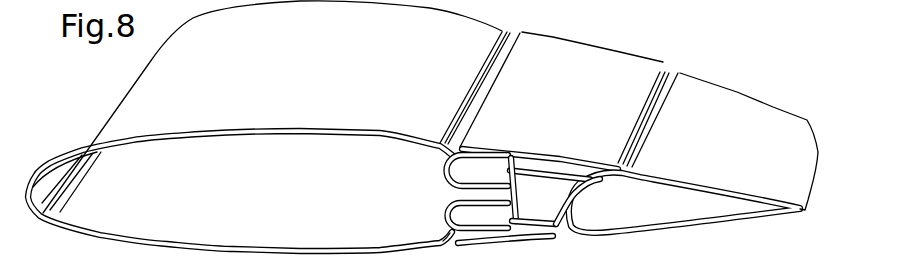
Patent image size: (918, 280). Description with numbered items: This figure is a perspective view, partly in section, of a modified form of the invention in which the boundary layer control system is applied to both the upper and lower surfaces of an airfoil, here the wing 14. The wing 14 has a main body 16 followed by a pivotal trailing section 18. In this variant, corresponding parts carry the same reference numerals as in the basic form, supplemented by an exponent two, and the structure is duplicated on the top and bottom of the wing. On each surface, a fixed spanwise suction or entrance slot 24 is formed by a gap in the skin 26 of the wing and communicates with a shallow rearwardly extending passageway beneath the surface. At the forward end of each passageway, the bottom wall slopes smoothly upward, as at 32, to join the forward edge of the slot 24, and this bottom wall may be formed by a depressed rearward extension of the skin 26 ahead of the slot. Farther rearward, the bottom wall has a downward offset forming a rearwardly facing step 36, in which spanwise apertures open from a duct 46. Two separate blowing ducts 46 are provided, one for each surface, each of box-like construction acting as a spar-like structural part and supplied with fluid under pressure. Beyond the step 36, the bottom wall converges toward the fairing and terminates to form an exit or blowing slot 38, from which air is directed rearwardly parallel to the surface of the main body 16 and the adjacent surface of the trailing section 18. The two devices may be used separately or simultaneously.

The main body 16 is at (140, 82).
The wing 14 is at (277, 128).
The trailing section 18 is at (676, 223).
The skin 26 is at (343, 140).
The suction or entrance slot 24 is at (460, 254).
The duct 46 is at (457, 217).
The upwardly sloping forward end of bottom wall 32 is at (443, 236).
The rearwardly facing step 36 is at (517, 153).
The exit or blowing slot 38 is at (628, 166).